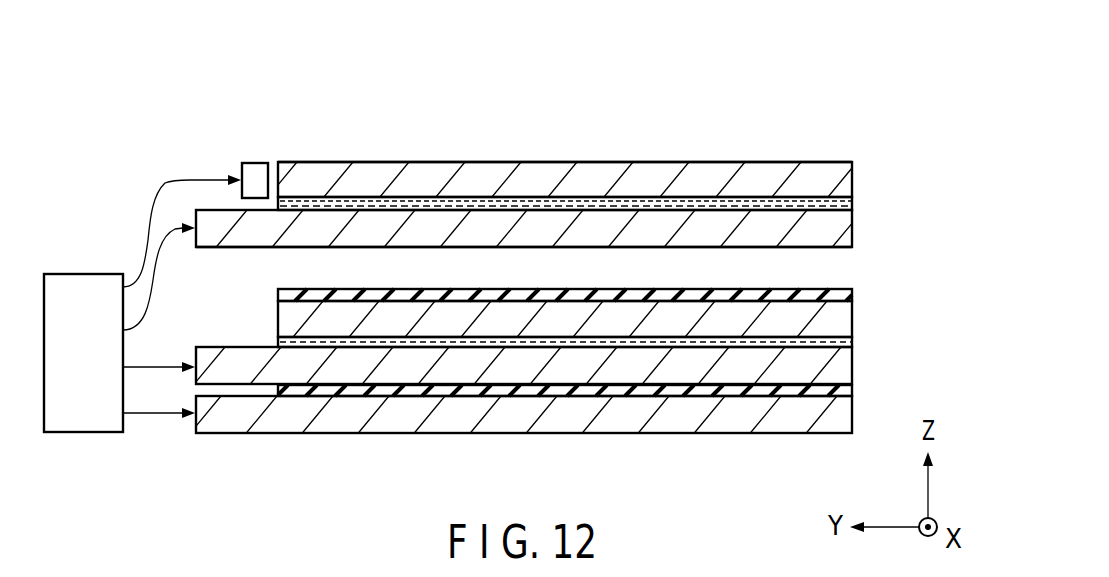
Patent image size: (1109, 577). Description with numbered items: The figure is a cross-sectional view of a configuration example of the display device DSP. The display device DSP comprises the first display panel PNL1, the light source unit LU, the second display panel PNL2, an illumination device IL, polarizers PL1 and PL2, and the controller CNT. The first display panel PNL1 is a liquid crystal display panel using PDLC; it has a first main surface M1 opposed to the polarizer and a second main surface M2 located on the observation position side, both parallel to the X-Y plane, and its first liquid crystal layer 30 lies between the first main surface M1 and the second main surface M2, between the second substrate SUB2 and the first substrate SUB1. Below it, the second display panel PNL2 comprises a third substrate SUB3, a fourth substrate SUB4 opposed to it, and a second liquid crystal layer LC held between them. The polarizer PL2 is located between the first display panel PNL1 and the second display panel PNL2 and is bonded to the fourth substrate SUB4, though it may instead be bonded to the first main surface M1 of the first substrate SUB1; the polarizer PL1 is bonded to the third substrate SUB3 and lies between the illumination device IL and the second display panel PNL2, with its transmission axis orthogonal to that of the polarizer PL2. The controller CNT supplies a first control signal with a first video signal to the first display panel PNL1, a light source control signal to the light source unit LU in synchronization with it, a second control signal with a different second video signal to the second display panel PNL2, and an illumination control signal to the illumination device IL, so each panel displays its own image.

The display device DSP is at (881, 86).
The first display panel PNL1 is at (858, 158).
The second display panel PNL2 is at (860, 301).
The second main surface M2 is at (740, 156).
The first main surface M1 is at (711, 256).
The second substrate SUB2 is at (844, 178).
The first liquid crystal layer 30 is at (846, 204).
The first substrate SUB1 is at (846, 231).
The polarizer PL2 is at (828, 294).
The fourth substrate SUB4 is at (846, 319).
The second liquid crystal layer LC is at (846, 344).
The third substrate SUB3 is at (846, 371).
The polarizer PL1 is at (846, 392).
The illumination device IL is at (846, 427).
The light source unit LU is at (253, 162).
The controller CNT is at (83, 353).